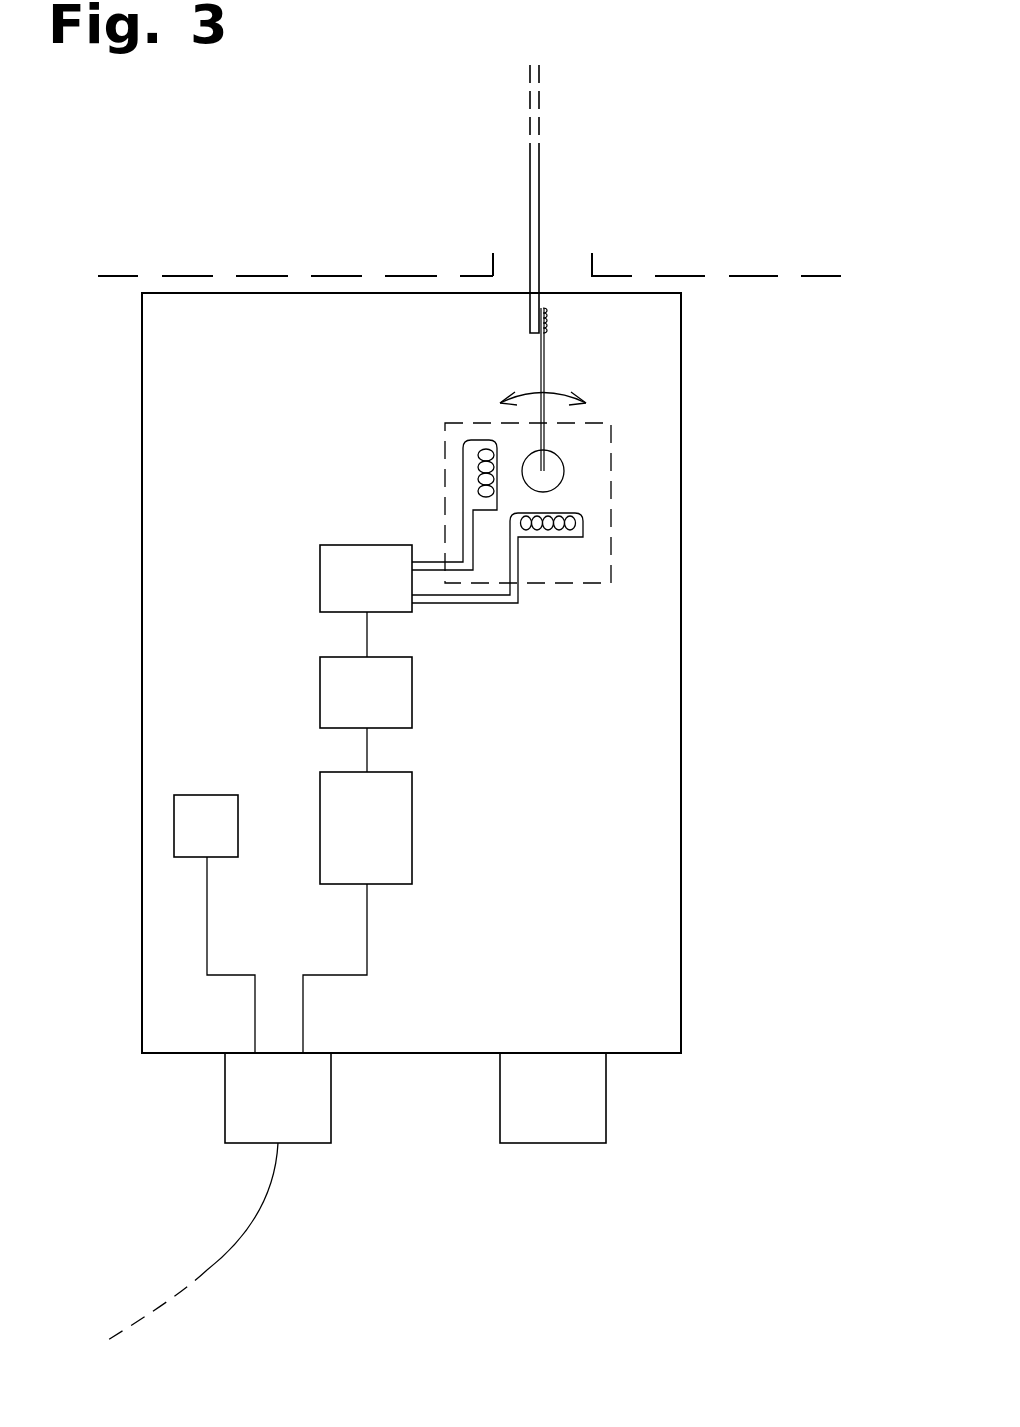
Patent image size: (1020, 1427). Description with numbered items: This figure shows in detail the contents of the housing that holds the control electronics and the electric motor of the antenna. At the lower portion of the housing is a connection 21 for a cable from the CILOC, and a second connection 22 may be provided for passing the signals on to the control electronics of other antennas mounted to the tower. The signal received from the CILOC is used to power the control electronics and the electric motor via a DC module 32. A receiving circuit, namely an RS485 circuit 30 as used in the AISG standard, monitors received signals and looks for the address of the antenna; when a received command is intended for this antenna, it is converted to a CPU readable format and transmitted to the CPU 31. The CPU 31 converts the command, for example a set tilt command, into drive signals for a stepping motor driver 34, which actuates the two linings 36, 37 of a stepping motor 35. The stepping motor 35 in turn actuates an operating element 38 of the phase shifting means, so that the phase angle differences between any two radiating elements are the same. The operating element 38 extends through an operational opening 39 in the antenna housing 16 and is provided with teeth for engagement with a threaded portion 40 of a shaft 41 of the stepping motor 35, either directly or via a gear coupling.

The antenna housing 16 is at (137, 277).
The connection 21 is at (237, 1097).
The second connection 22 is at (590, 1093).
The RS485 circuit 30 is at (405, 845).
The CPU 31 is at (405, 692).
The DC module 32 is at (178, 825).
The stepping motor driver 34 is at (325, 577).
The stepping motor 35 is at (611, 501).
The lining 36 is at (575, 537).
The lining 37 is at (472, 469).
The operating element 38 is at (539, 187).
The operational opening 39 is at (573, 269).
The threaded portion 40 is at (546, 323).
The shaft 41 is at (546, 416).